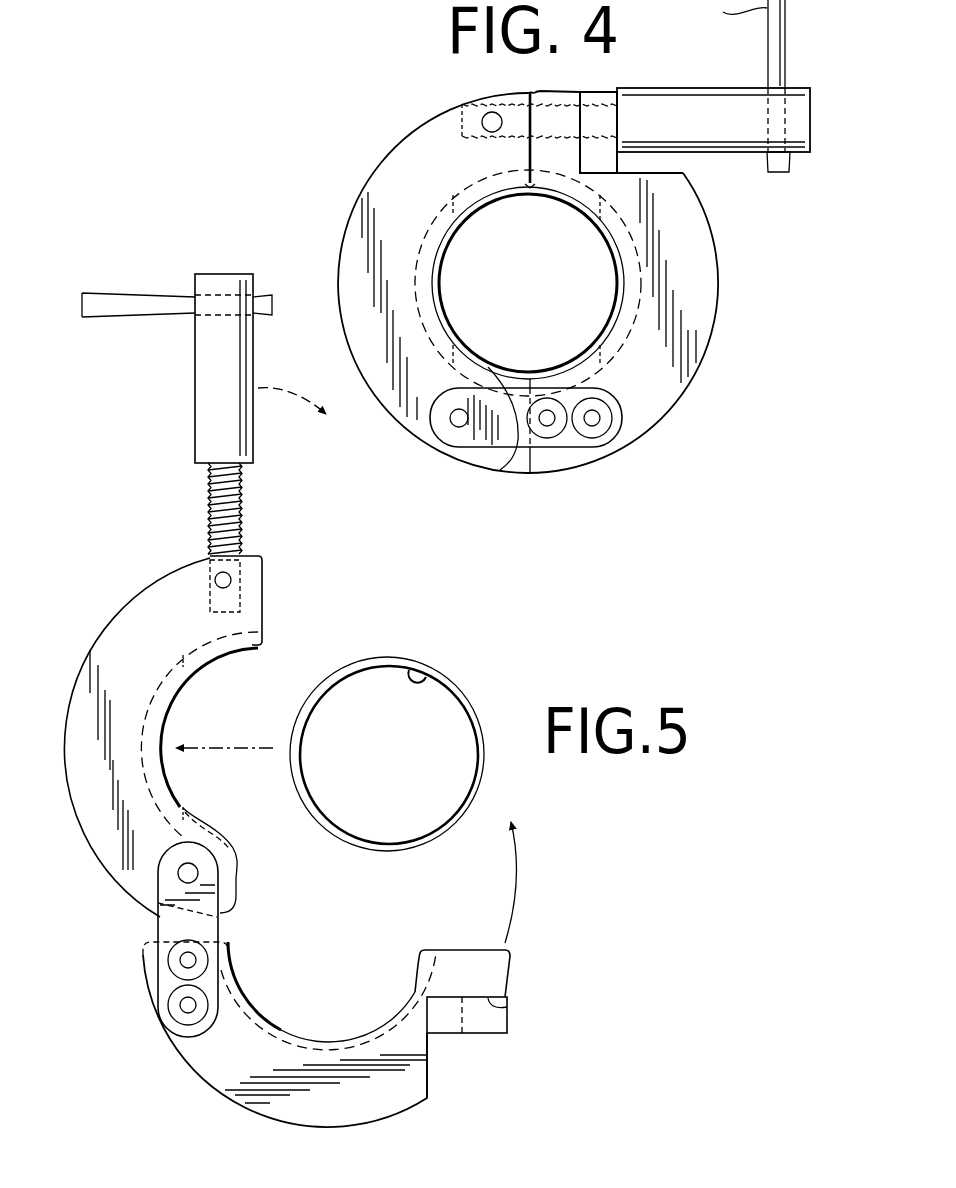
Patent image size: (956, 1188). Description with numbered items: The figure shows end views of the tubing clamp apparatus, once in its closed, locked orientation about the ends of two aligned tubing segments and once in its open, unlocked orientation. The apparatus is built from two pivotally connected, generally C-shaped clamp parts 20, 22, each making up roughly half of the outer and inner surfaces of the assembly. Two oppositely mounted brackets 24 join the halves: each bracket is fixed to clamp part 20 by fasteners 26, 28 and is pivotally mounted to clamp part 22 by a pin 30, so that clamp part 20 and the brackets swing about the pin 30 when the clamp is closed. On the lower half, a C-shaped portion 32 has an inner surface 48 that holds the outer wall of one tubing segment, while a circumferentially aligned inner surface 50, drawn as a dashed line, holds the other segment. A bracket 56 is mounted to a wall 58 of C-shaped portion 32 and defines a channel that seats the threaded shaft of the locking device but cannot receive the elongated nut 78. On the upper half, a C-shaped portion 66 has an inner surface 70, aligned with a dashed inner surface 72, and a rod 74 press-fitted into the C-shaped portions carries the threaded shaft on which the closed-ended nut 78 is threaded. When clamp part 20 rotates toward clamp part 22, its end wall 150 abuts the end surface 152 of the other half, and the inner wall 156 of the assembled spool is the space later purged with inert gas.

In FIG. 5, the C-shaped clamp part 20 is at (430, 1100).
In FIG. 5, the C-shaped clamp part 22 is at (66, 652).
In FIG. 4, the mounting bracket 24 is at (517, 448).
In FIG. 5, the mounting bracket 24 is at (160, 920).
In FIG. 4, the fastener 26 is at (547, 426).
In FIG. 5, the fastener 26 is at (178, 962).
In FIG. 4, the fastener 28 is at (592, 428).
In FIG. 5, the fastener 28 is at (178, 1005).
In FIG. 4, the pin 30 is at (459, 427).
In FIG. 5, the pin 30 is at (178, 873).
In FIG. 4, the C-shaped portion 32 is at (710, 350).
In FIG. 5, the C-shaped portion 32 is at (415, 1078).
In FIG. 5, the inner surface 48 is at (380, 1015).
In FIG. 5, the inner surface 50 is at (290, 1042).
In FIG. 5, the bracket 56 is at (510, 1040).
In FIG. 5, the wall 58 is at (505, 1005).
In FIG. 4, the C-shaped portion 66 is at (355, 228).
In FIG. 5, the C-shaped portion 66 is at (132, 610).
In FIG. 5, the inner surface 70 is at (183, 683).
In FIG. 5, the inner surface 72 is at (167, 710).
In FIG. 5, the rod 74 is at (238, 580).
In FIG. 4, the elongated nut 78 is at (812, 137).
In FIG. 5, the end wall 150 is at (485, 950).
In FIG. 5, the end surface 152 is at (263, 618).
In FIG. 5, the inner wall 156 is at (428, 682).